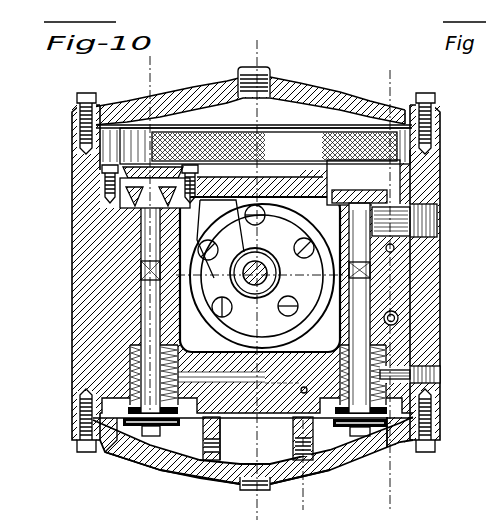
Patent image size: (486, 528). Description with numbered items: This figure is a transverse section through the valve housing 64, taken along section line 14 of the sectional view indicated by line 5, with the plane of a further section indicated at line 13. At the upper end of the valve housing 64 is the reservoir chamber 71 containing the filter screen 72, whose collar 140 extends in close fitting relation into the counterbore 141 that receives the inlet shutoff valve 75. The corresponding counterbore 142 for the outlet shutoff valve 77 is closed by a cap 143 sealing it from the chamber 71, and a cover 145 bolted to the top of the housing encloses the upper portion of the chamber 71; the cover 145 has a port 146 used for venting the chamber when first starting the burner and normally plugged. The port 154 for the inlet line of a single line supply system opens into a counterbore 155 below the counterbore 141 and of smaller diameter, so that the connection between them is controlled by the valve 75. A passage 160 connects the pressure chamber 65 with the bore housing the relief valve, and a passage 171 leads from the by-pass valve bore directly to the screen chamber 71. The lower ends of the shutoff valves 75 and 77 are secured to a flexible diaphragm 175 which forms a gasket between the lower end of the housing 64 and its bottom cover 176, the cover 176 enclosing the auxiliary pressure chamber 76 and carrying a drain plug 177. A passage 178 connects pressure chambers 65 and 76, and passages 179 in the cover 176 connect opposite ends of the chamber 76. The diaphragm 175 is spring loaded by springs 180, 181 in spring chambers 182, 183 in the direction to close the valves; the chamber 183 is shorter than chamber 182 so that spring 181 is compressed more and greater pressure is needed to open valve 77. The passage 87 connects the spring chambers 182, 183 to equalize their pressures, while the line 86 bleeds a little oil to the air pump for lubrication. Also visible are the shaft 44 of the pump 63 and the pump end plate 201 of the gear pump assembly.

The section line 5- 5 is at (282, 40).
The section line 13- 13 is at (364, 72).
The section line 14- 14 is at (180, 58).
The shaft 44 is at (262, 265).
The pump 63 is at (186, 289).
The valve housing 64 is at (82, 295).
The pressure chamber 65 is at (182, 312).
The reservoir chamber 71 is at (216, 107).
The filter screen 72 is at (325, 140).
The inlet shutoff valve 75 is at (412, 190).
The auxiliary pressure chamber 76 is at (157, 444).
The outlet shutoff valve 77 is at (145, 214).
The line 86 is at (306, 394).
The passage 87 is at (283, 392).
The collar 140 is at (323, 173).
The counterbore 141 is at (392, 199).
The counterbore 142 is at (104, 189).
The cap 143 is at (130, 166).
The cover 145 is at (120, 107).
The port 146 is at (270, 84).
The port 154 is at (415, 214).
The counterbore 155 is at (395, 248).
The passage 160 is at (399, 316).
The passage 171 is at (397, 254).
The flexible diaphragm 175 is at (115, 440).
The bottom cover 176 is at (123, 460).
The drain plug 177 is at (252, 479).
The passage 178 is at (232, 420).
The passages 179 is at (210, 449).
The spring 180 is at (383, 353).
The spring 181 is at (135, 355).
The spring chamber 182 is at (384, 371).
The spring chamber 183 is at (132, 376).
The pump end plate 201 is at (203, 268).